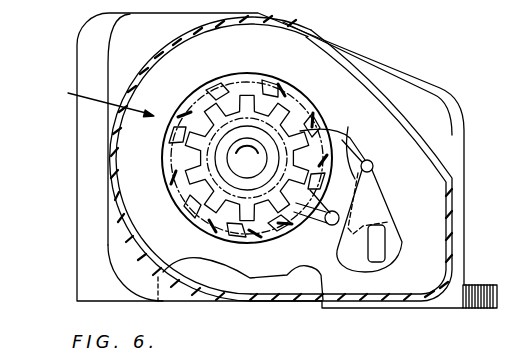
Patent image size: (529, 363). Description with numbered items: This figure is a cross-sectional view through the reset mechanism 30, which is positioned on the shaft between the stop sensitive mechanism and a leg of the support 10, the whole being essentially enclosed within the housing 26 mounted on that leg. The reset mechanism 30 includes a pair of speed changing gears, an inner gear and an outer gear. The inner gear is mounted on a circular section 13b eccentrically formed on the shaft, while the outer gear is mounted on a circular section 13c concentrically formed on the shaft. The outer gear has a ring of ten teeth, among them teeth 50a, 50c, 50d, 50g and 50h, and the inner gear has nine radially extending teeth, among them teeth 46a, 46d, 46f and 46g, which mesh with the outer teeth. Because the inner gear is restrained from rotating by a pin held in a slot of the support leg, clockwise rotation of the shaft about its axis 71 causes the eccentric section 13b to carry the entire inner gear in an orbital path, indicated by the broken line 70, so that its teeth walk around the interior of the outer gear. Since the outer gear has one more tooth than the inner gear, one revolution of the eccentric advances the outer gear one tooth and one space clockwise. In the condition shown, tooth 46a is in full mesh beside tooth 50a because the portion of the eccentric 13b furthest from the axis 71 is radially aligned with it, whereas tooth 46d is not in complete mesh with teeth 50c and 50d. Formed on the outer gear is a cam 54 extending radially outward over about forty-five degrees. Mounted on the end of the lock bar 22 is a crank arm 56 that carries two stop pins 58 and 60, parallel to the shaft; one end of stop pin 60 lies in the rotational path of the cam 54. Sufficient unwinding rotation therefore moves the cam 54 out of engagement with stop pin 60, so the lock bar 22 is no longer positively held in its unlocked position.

The support 10 is at (102, 13).
The housing 26 is at (168, 47).
The reset mechanism 30 is at (98, 100).
The broken line 70 is at (181, 197).
The axis of rotation of the shaft 71 is at (247, 158).
The eccentric circular section 13b is at (233, 140).
The concentric circular section 13c is at (252, 146).
The tooth of the outer gear 50a is at (212, 104).
The tooth of the outer gear 50c is at (294, 108).
The tooth of the outer gear 50d is at (318, 133).
The tooth of the outer gear 50g is at (250, 232).
The tooth of the outer gear 50h is at (197, 212).
The tooth of the inner gear 46a is at (196, 116).
The tooth of the inner gear 46d is at (308, 124).
The tooth of the inner gear 46f is at (278, 228).
The tooth of the inner gear 46g is at (236, 213).
The stop pin 58 is at (332, 226).
The stop pin 60 is at (374, 166).
The cam 54 is at (348, 143).
The crank arm 56 is at (381, 200).
The lock bar 22 is at (378, 248).